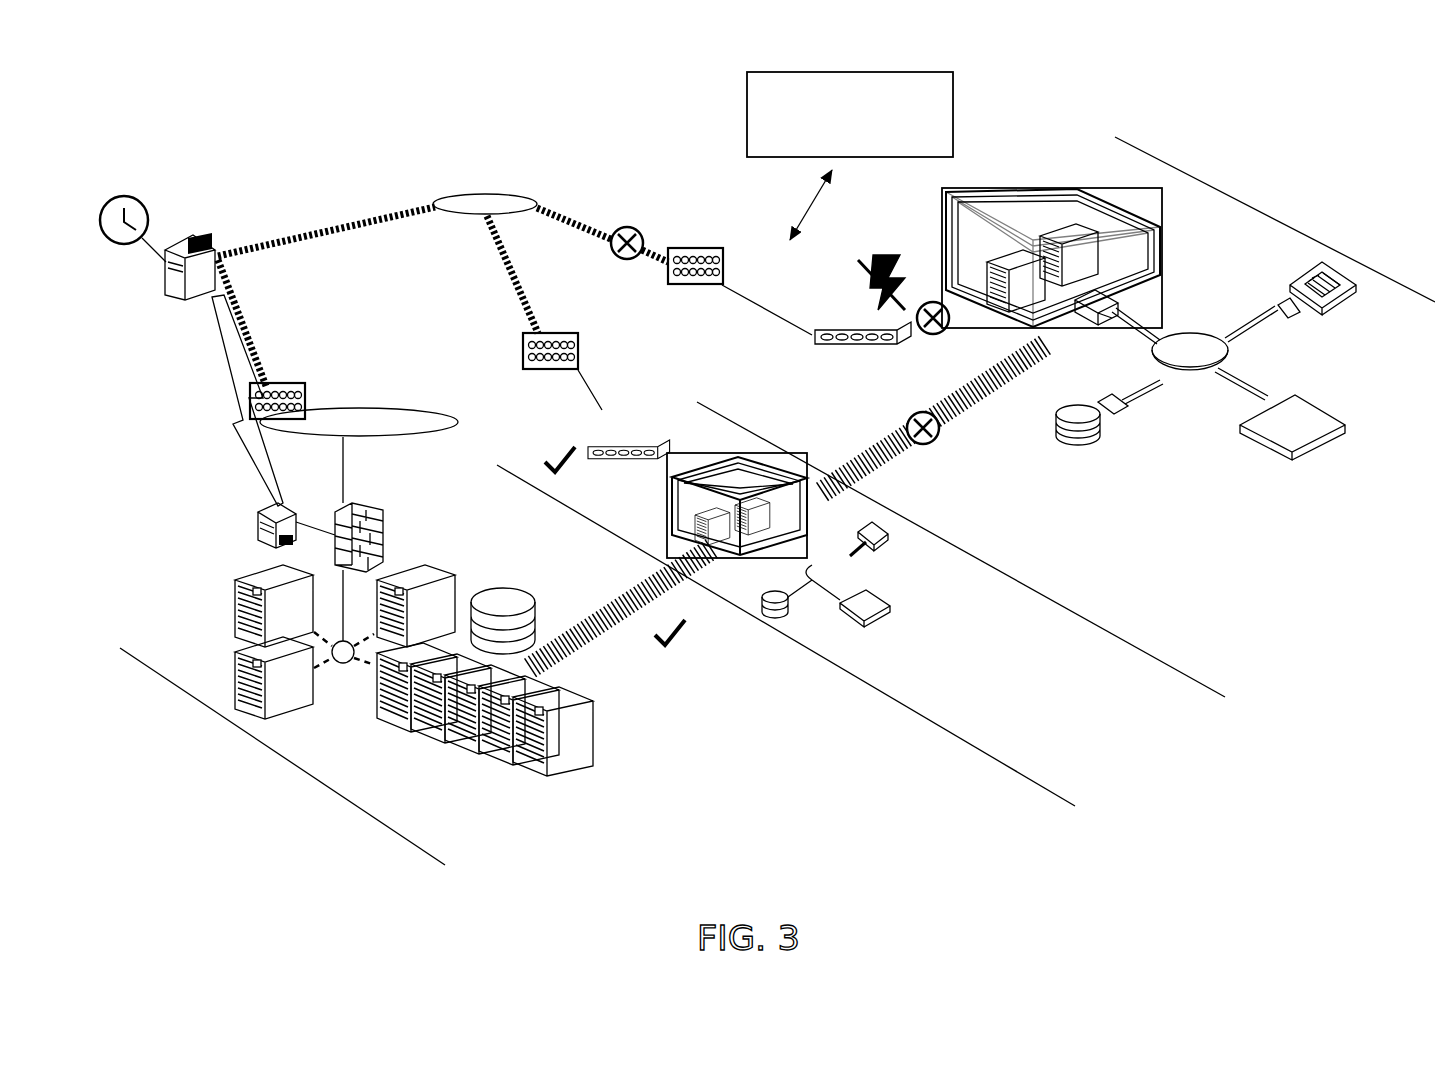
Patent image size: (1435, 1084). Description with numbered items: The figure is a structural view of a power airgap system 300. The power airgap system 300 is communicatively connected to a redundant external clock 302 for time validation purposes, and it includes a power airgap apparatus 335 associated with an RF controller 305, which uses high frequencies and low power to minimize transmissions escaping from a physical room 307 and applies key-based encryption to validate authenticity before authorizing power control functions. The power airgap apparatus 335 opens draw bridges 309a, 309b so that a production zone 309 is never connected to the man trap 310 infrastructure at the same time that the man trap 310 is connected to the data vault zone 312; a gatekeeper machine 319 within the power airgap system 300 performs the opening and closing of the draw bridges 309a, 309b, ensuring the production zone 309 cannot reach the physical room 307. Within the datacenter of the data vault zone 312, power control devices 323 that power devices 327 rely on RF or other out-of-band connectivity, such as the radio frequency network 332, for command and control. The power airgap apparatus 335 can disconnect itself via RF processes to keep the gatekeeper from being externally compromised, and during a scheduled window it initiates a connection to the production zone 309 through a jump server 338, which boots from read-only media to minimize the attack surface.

The power airgap system 300 is at (160, 126).
The redundant external clock 302 is at (112, 200).
The RF controller 305 is at (747, 100).
The physical room 307 is at (1070, 148).
The production zone 309 is at (588, 902).
The draw bridge 309a is at (745, 738).
The draw bridge 309b is at (1010, 432).
The man trap 310 is at (1050, 738).
The data vault zone 312 is at (1375, 625).
The gatekeeper machine 319 is at (715, 450).
The power control device 323 is at (830, 318).
The powered device 327 is at (1165, 262).
The radio frequency network 332 is at (520, 125).
The power airgap apparatus 335 is at (206, 240).
The jump server 338 is at (286, 502).